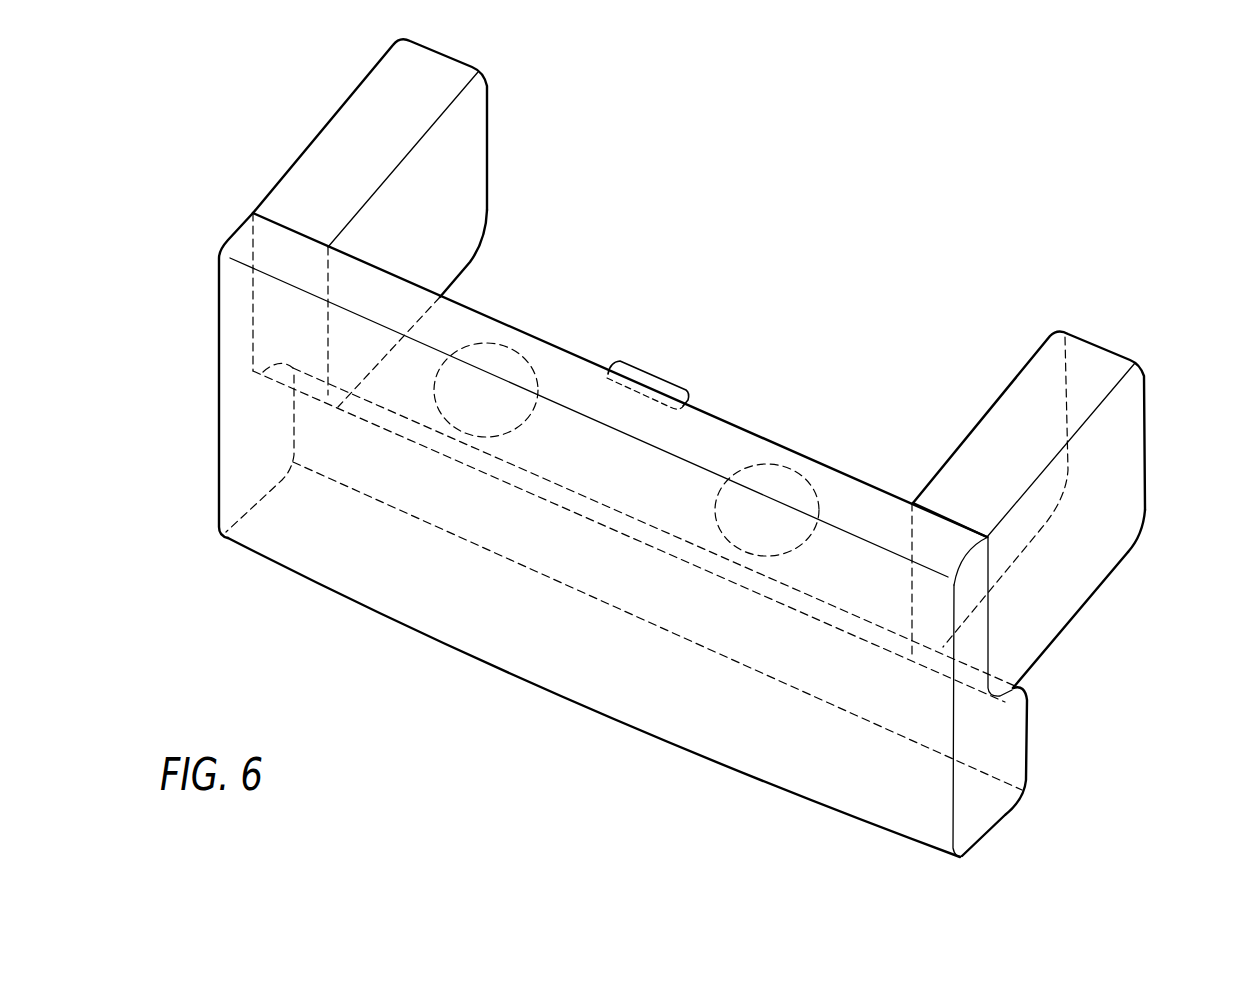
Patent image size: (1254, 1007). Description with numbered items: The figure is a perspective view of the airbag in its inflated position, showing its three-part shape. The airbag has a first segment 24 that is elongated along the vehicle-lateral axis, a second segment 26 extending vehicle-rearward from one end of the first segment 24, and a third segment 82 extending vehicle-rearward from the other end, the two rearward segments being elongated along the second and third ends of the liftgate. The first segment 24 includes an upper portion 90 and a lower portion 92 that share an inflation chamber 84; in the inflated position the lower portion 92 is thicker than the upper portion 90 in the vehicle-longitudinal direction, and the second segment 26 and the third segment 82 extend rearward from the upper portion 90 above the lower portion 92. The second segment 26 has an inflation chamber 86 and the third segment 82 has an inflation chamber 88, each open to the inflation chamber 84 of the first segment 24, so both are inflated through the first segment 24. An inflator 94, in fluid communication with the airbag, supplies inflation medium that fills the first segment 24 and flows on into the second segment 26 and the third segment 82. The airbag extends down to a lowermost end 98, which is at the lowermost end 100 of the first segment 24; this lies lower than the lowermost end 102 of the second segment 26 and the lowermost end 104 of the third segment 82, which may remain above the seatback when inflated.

The first segment 24 is at (600, 713).
The second segment 26 is at (1100, 587).
The third segment 82 is at (315, 137).
The inflation chamber 84 is at (486, 626).
The inflation chamber 86 is at (1102, 467).
The inflation chamber 88 is at (445, 176).
The upper portion 90 is at (1010, 728).
The lower portion 92 is at (973, 572).
The inflator 94 is at (655, 375).
The lowermost end 98 is at (594, 697).
The lowermost end 100 is at (720, 778).
The lowermost end 102 is at (1146, 555).
The lowermost end 104 is at (482, 276).